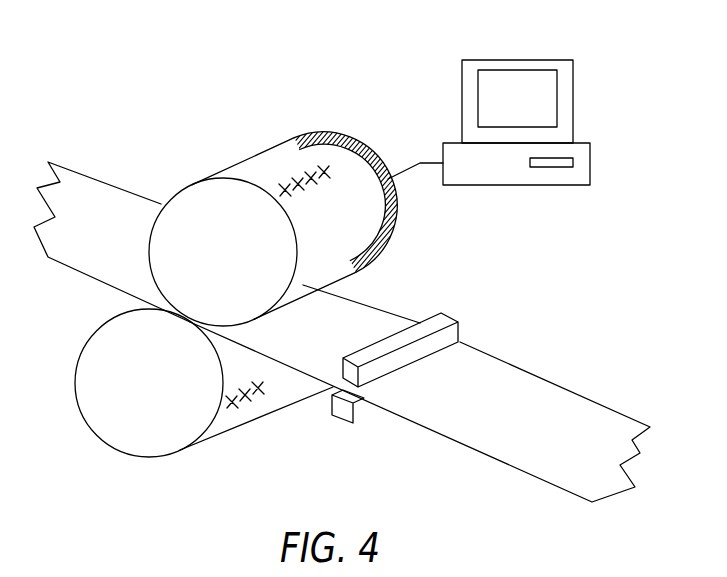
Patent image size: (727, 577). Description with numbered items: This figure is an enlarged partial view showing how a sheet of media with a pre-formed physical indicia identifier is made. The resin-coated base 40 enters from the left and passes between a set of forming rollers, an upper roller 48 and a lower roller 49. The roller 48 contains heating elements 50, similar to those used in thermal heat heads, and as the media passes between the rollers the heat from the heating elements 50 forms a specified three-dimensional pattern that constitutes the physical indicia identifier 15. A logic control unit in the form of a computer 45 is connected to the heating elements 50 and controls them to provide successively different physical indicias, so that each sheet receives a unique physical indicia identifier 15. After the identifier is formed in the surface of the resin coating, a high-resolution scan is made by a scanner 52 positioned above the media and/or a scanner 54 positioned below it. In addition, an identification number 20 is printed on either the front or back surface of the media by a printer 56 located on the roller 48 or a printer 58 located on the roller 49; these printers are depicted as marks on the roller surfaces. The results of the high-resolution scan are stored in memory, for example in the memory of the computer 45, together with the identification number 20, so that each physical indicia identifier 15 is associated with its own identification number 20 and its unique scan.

The physical indicia identifier 15 is at (335, 300).
The identification number 20 is at (282, 329).
The base 40 is at (97, 267).
The computer 45 is at (470, 58).
The physical indicia identifier forming roller 48 is at (207, 197).
The roller 49 is at (155, 443).
The heating elements 50 is at (368, 140).
The scanner 52 is at (448, 314).
The scanner 54 is at (333, 424).
The printer 56 is at (287, 180).
The printer 58 is at (247, 405).